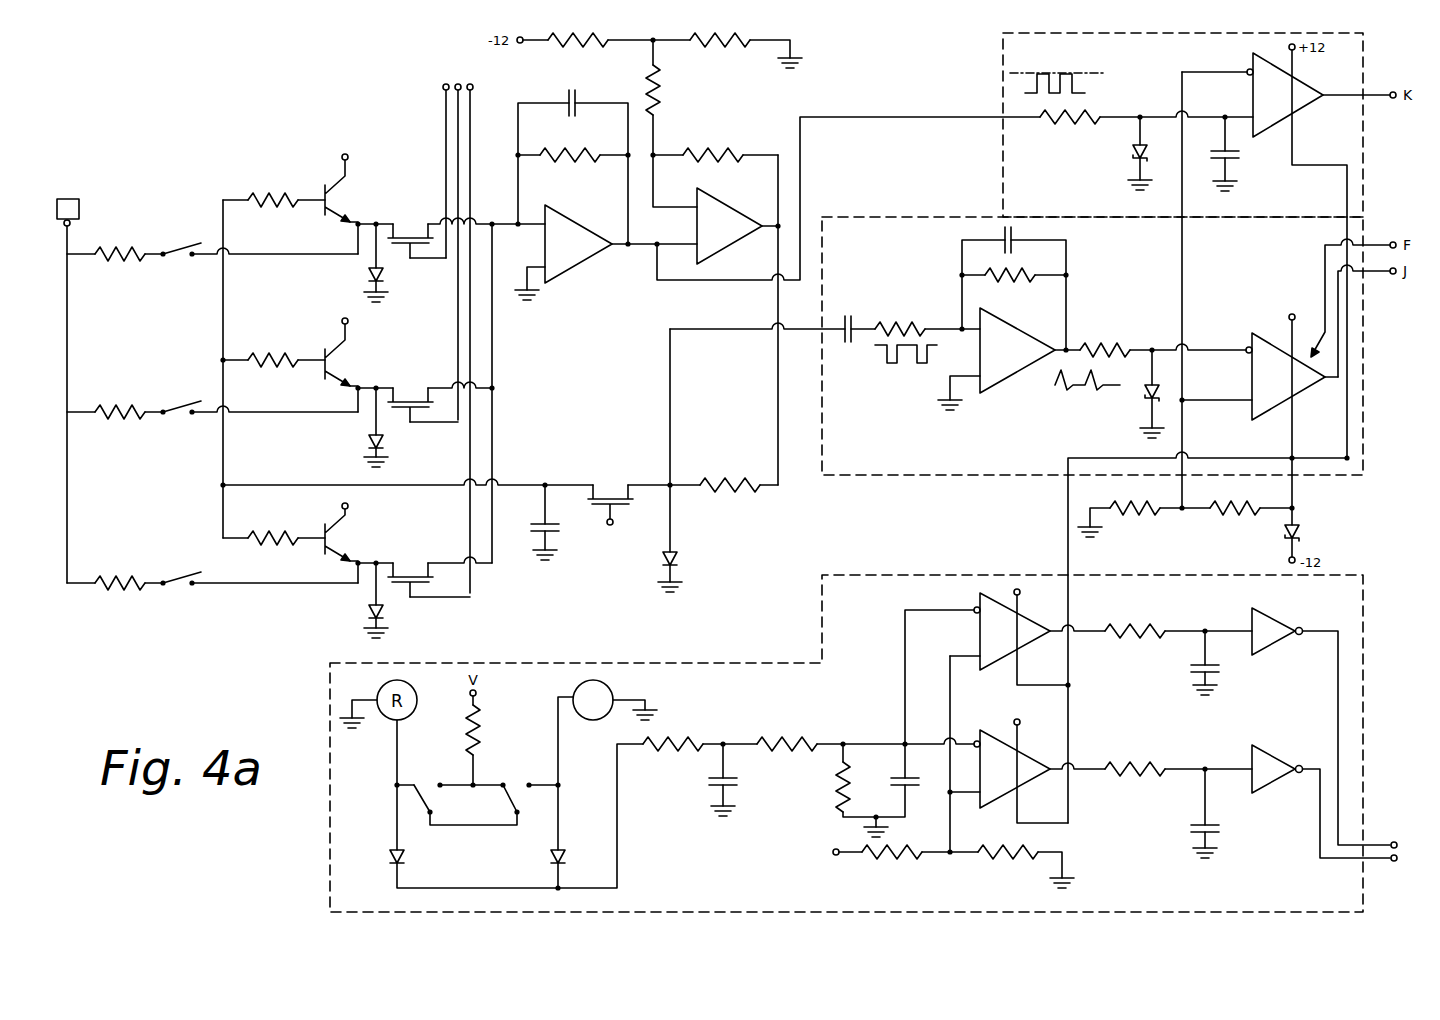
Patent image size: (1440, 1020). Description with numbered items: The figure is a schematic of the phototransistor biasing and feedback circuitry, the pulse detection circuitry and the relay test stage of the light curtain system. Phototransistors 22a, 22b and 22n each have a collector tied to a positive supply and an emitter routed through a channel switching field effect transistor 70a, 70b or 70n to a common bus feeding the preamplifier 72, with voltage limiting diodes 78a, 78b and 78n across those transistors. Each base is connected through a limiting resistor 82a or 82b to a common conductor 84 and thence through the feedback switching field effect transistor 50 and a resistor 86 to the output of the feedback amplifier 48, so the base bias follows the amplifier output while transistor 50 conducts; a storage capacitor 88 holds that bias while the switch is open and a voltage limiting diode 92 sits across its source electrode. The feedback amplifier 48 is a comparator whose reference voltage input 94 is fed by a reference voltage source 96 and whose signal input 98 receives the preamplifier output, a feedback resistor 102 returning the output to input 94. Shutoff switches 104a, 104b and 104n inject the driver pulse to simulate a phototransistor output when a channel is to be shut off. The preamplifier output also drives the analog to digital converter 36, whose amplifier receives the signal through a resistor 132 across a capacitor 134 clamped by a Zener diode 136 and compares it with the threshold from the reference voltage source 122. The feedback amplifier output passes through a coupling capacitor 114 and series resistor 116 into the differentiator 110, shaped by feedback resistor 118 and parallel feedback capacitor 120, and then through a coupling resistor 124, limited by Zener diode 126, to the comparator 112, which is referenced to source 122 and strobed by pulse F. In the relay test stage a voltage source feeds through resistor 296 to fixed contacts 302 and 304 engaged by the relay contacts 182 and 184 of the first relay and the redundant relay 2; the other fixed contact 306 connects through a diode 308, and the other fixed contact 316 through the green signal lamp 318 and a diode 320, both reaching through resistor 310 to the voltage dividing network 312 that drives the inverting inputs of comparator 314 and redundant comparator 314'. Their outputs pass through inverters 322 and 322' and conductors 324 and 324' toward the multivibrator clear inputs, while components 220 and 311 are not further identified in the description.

The redundant relay 2 is at (77, 212).
The phototransistor 22a is at (324, 186).
The phototransistor 22b is at (323, 350).
The phototransistor 22n is at (323, 528).
The analog to digital converter 36 is at (1000, 103).
The feedback amplifier 48 is at (722, 210).
The feedback switching field effect transistor 50 is at (605, 484).
The channel switching field effect transistor 70a is at (405, 226).
The channel switching field effect transistor 70b is at (405, 390).
The channel switching field effect transistor 70n is at (405, 565).
The preamplifier 72 is at (589, 228).
The voltage limiting diode 78a is at (368, 277).
The voltage limiting diode 78b is at (368, 441).
The voltage limiting diode 78n is at (368, 610).
The limiting resistor 82a is at (265, 197).
The limiting resistor 82b is at (252, 363).
The common conductor 84 is at (283, 484).
The resistor 86 is at (730, 483).
The storage capacitor 88 is at (560, 530).
The voltage limiting diode 92 is at (680, 560).
The reference voltage input 94 is at (683, 206).
The reference voltage source 96 is at (650, 42).
The signal input 98 is at (660, 243).
The feedback resistor 102 is at (718, 152).
The shutoff switch 104a is at (196, 246).
The shutoff switch 104b is at (196, 404).
The shutoff switch 104n is at (170, 588).
The differentiator 110 is at (1010, 378).
The comparator 112 is at (1257, 413).
The coupling capacitor 114 is at (845, 343).
The series resistor 116 is at (892, 323).
The feedback resistor 118 is at (1015, 278).
The parallel feedback capacitor 120 is at (1001, 239).
The reference voltage source 122 is at (1183, 512).
The coupling resistor 124 is at (1105, 348).
The Zener diode 126 is at (1147, 396).
The resistor 132 is at (1068, 119).
The capacitor 134 is at (1232, 158).
The Zener diode 136 is at (1134, 150).
The relay contacts 182 is at (430, 820).
The relay contacts 184 is at (519, 812).
The resistor 220 is at (953, 850).
The resistor 296 is at (468, 722).
The fixed contact 302 is at (442, 788).
The fixed contact 304 is at (510, 796).
The fixed contact 306 is at (418, 788).
The diode 308 is at (403, 858).
The resistor 310 is at (695, 746).
The capacitor 311 is at (735, 783).
The voltage dividing network 312 is at (805, 742).
The comparator 314 is at (987, 633).
The redundant comparator 314' is at (1009, 750).
The fixed contact 316 is at (530, 783).
The green signal lamp 318 is at (612, 692).
The diode 320 is at (552, 858).
The inverter 322 is at (1321, 726).
The inverter 322' is at (1321, 801).
The conductor 324 is at (1397, 820).
The conductor 324' is at (1408, 878).